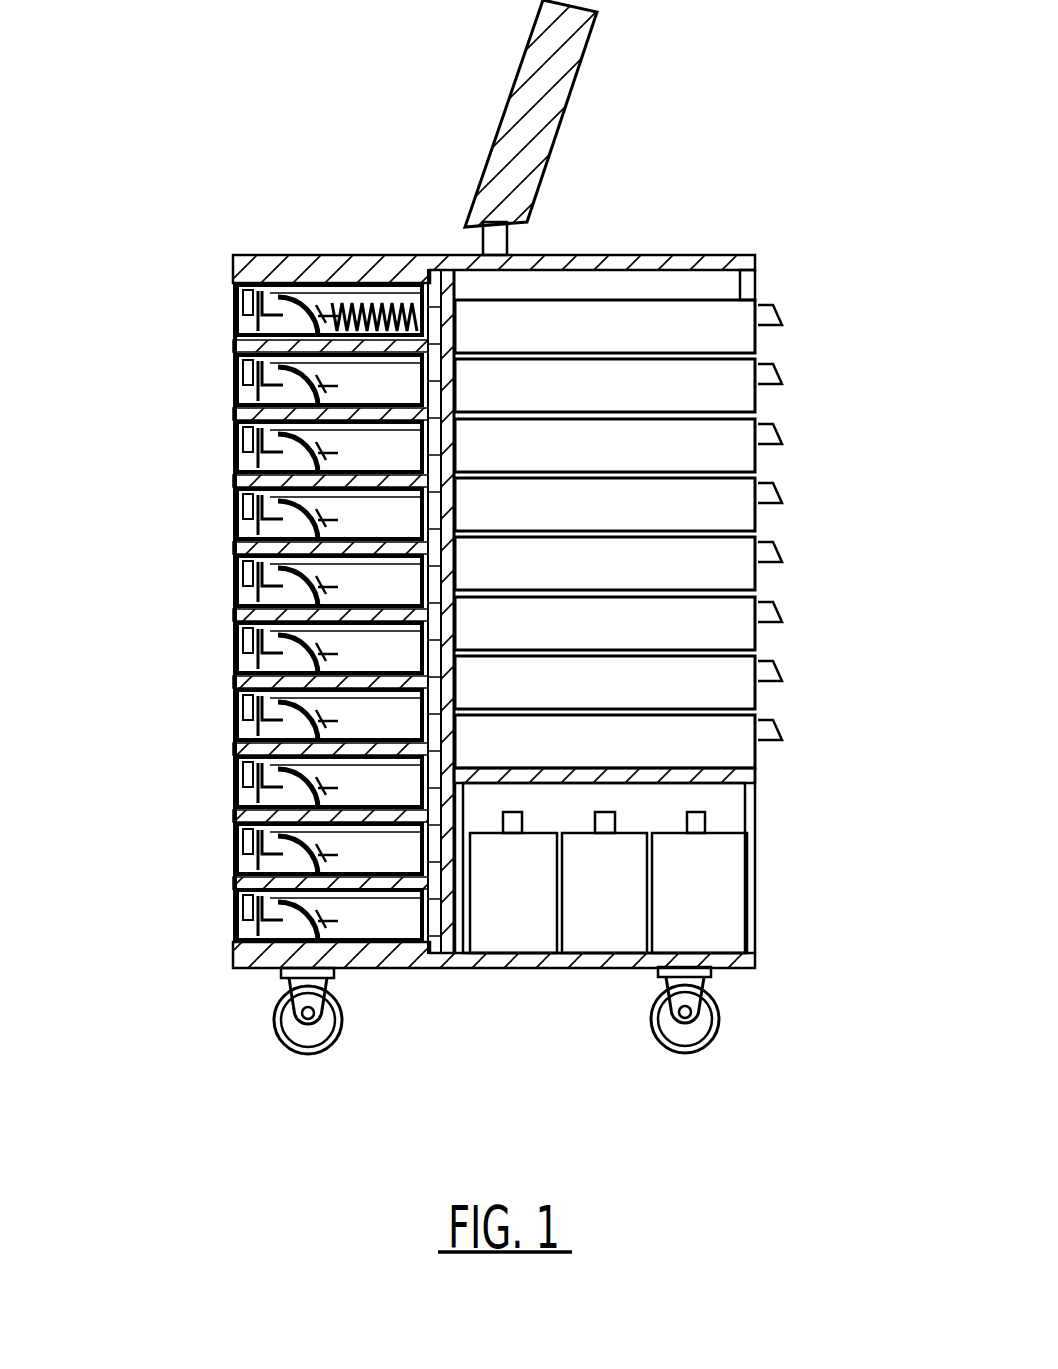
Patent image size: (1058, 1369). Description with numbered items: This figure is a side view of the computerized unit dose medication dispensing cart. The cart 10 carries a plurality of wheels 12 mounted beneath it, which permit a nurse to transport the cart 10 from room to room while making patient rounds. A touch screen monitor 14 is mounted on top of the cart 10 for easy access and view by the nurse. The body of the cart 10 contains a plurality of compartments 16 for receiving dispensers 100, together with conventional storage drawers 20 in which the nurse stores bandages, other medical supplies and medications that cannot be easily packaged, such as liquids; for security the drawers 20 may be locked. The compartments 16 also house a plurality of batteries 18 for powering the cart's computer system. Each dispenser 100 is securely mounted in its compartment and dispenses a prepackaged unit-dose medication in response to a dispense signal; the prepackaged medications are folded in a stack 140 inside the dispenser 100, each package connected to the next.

The cart 10 is at (755, 262).
The wheels 12 is at (272, 1022).
The touch screen monitor 14 is at (597, 33).
The compartments 16 is at (737, 806).
The batteries 18 is at (718, 895).
The storage drawers 20 is at (737, 387).
The dispenser 100 is at (243, 458).
The stack 140 is at (330, 328).